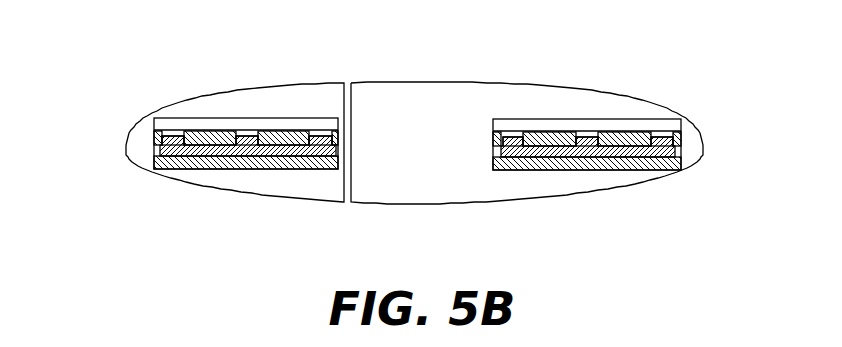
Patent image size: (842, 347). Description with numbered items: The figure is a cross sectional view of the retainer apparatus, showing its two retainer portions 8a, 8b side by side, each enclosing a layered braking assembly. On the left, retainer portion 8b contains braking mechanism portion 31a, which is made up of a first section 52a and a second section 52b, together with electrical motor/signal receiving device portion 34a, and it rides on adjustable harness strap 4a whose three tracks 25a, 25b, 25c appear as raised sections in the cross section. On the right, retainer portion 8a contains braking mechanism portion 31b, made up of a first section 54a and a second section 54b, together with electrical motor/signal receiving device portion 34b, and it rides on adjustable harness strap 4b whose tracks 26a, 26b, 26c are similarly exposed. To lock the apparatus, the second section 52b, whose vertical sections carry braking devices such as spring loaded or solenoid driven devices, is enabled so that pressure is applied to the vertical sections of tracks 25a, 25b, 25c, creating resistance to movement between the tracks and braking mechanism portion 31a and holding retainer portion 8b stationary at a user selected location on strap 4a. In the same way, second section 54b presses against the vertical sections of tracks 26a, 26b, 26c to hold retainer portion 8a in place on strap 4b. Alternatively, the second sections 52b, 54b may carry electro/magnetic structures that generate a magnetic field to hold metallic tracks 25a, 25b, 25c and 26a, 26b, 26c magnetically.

The retainer portion 8a is at (380, 189).
The retainer portion 8b is at (296, 189).
The braking mechanism portion 31a is at (264, 104).
The braking mechanism portion 31b is at (607, 106).
The electrical motor/signal receiving device portion 34a is at (146, 115).
The electrical motor/signal receiving device portion 34b is at (671, 116).
The first section 52a is at (146, 156).
The second section 52b is at (149, 129).
The first section 54a is at (671, 156).
The second section 54b is at (671, 130).
The adjustable harness strap 4a is at (152, 141).
The adjustable harness strap 4b is at (667, 141).
The track 25a is at (164, 130).
The track 25b is at (311, 130).
The track 25c is at (237, 130).
The track 26a is at (504, 131).
The track 26b is at (655, 131).
The track 26c is at (580, 131).